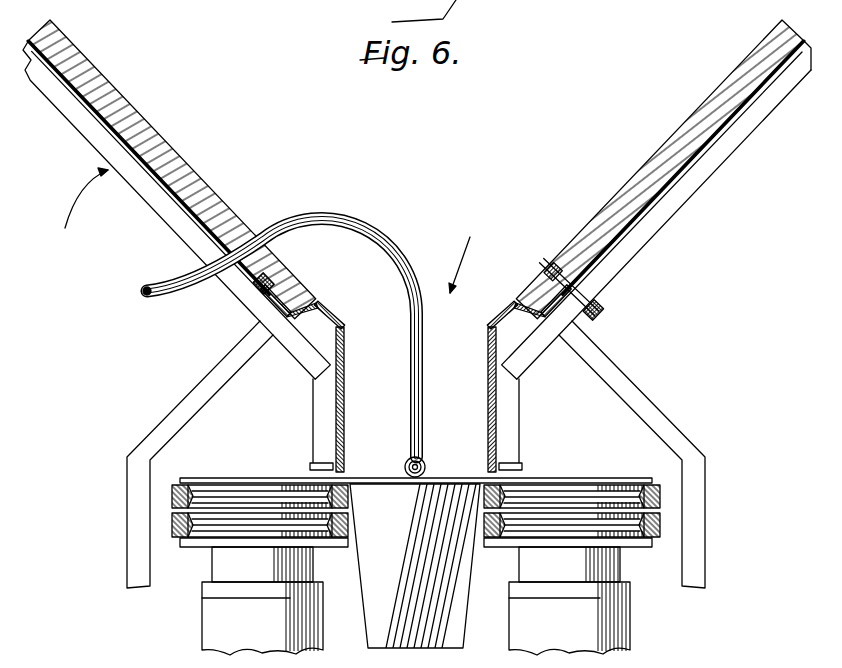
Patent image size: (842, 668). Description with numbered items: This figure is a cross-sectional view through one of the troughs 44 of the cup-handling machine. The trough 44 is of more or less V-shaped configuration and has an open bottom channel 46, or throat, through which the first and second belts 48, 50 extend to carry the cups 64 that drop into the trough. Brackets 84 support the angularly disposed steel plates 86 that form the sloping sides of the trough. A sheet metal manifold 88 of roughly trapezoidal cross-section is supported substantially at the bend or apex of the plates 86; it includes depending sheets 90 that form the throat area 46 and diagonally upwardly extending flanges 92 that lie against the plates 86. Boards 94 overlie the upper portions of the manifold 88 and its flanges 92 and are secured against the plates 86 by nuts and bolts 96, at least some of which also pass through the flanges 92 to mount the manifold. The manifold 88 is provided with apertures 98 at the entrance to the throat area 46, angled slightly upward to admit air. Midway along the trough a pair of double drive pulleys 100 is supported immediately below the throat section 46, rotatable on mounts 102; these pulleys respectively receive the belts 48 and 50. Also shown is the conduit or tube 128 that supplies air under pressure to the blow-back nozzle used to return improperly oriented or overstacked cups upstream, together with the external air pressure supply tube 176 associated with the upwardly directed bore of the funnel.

The trough 44 is at (81, 210).
The open bottom channel 46 is at (466, 253).
The first belt 48 is at (416, 499).
The second belt 50 is at (416, 525).
The cup 64 is at (409, 568).
The bracket 84 is at (417, 454).
The steel plate 86 is at (417, 209).
The sheet metal manifold 88 is at (413, 354).
The depending sheet 90 is at (416, 399).
The manifold flange 92 is at (484, 284).
The board 94 is at (419, 169).
The nuts and bolts 96 is at (559, 238).
The aperture 98 is at (415, 315).
The double drive pulley 100 is at (379, 556).
The mount 102 is at (395, 601).
The conduit or tube 128 is at (280, 314).
The external air pressure supply tube 176 is at (436, 450).